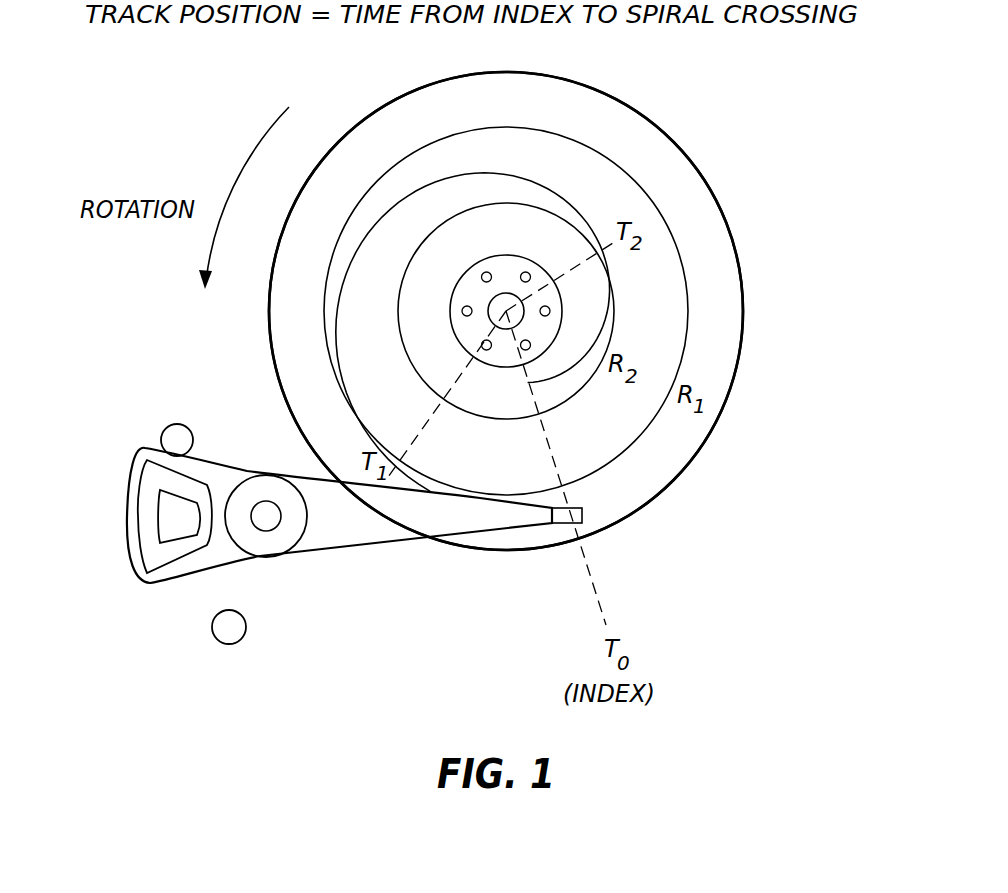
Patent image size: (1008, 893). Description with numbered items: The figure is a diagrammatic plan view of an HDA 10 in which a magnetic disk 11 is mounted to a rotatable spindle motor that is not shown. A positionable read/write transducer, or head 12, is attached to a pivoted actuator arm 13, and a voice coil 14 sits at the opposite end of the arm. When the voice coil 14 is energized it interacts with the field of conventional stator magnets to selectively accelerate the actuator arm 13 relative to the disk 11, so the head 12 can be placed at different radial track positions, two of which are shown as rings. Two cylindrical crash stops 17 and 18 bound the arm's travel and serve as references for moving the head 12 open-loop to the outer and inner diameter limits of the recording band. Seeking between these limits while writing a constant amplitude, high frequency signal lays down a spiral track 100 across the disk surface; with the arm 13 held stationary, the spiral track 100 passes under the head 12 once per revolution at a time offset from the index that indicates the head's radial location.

The HDA 10 is at (734, 119).
The magnetic disk 11 is at (689, 467).
The read/write transducer (head) 12 is at (558, 534).
The actuator arm 13 is at (429, 527).
The voice coil 14 is at (146, 524).
The crash stop 17 is at (193, 428).
The crash stop 18 is at (212, 623).
The spiral track 100 is at (545, 189).